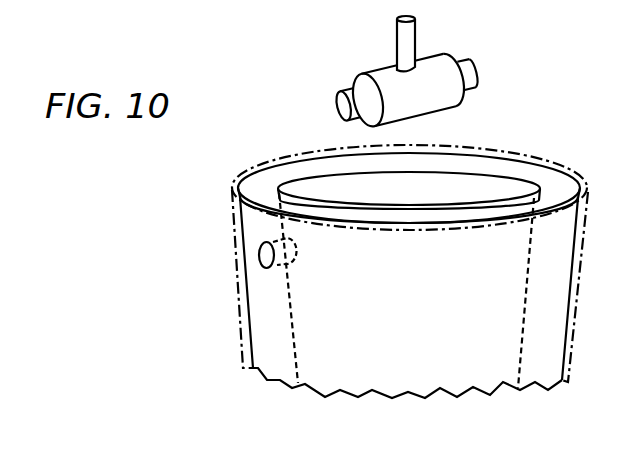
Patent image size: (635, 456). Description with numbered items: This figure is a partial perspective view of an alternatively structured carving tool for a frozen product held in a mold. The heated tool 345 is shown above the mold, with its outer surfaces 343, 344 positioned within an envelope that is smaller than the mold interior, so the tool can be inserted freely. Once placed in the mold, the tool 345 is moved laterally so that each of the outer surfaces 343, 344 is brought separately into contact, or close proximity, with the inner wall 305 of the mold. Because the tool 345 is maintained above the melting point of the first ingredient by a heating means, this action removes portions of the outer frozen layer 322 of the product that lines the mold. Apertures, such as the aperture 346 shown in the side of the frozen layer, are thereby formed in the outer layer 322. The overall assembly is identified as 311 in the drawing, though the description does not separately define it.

The inner wall of the mold 305 is at (565, 173).
The valve assembly 311 is at (411, 65).
The outer frozen layer 322 is at (274, 177).
The outer surface of the heated tool 343 is at (337, 110).
The outer surface of the heated tool 344 is at (477, 67).
The heated tool 345 is at (428, 62).
The aperture 346 is at (266, 256).